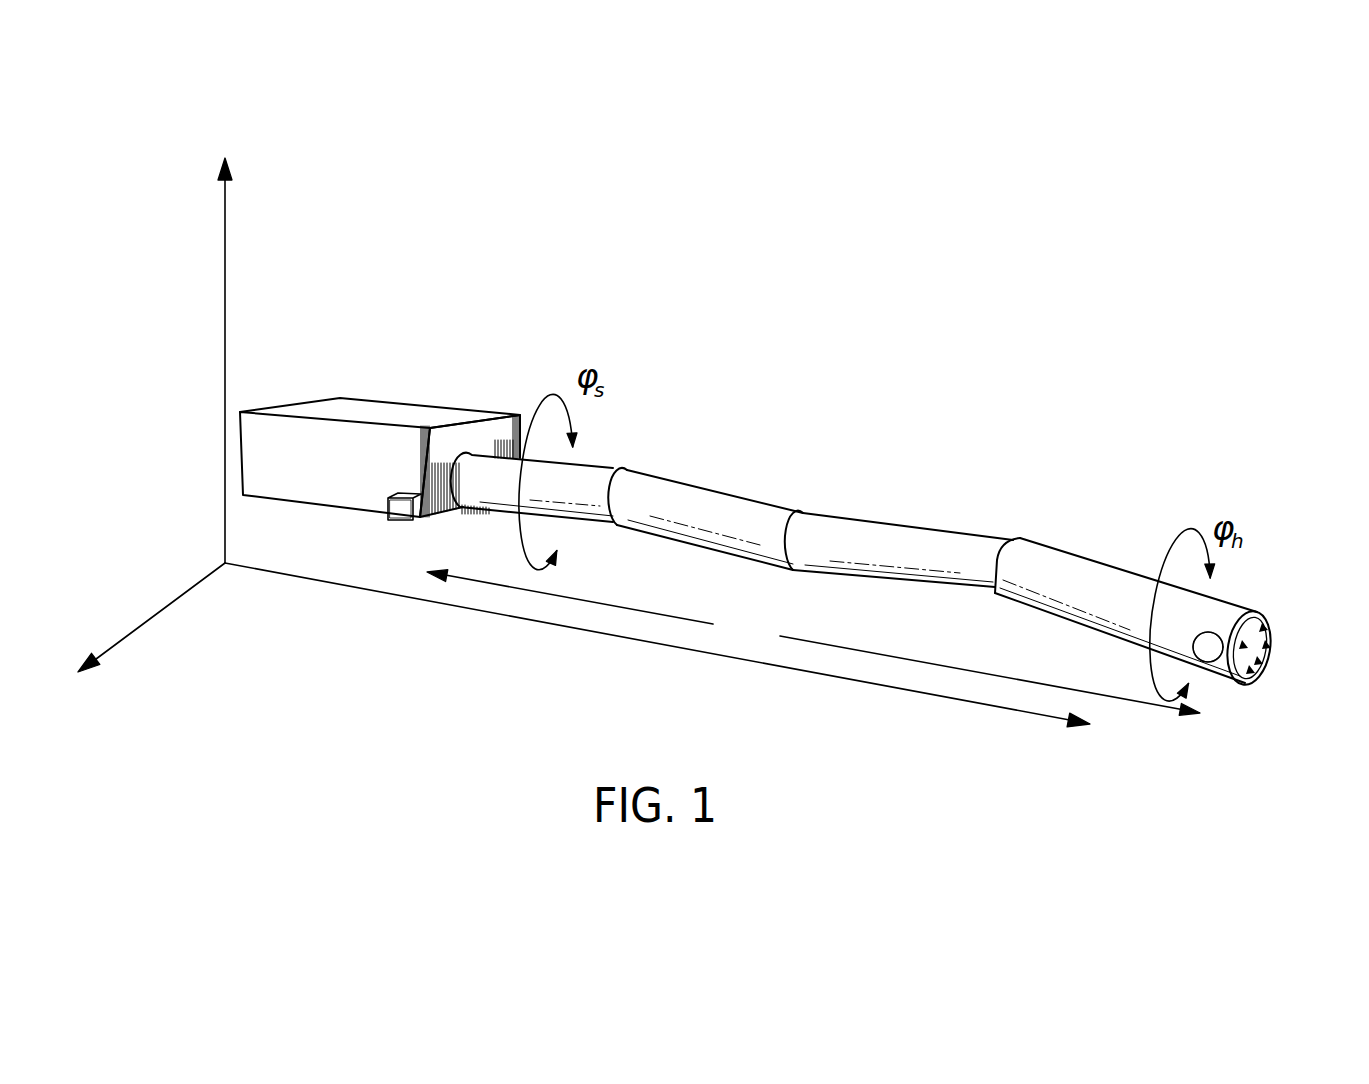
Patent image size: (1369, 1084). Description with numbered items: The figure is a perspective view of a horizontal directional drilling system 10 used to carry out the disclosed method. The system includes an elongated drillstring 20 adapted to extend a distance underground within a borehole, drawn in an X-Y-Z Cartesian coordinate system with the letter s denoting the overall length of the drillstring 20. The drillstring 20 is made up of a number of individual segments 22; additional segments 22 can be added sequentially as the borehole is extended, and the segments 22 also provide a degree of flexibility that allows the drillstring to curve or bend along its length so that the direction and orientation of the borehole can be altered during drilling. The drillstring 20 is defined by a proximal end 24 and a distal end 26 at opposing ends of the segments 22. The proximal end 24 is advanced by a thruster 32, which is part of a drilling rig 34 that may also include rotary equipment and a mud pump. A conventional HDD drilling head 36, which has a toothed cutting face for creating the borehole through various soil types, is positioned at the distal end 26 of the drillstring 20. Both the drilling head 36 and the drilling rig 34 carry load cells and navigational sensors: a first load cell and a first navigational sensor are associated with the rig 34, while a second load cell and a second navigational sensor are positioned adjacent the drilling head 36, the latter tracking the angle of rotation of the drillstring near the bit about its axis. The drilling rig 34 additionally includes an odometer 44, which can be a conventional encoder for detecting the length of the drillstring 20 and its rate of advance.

The horizontal directional drilling system 10 is at (528, 648).
The drillstring 20 is at (897, 585).
The segment 22 is at (615, 468).
The proximal end 24 is at (558, 512).
The distal end 26 is at (1247, 688).
The thruster 32 is at (477, 433).
The drilling rig 34 is at (300, 432).
The drilling head 36 is at (1263, 647).
The odometer 44 is at (388, 504).